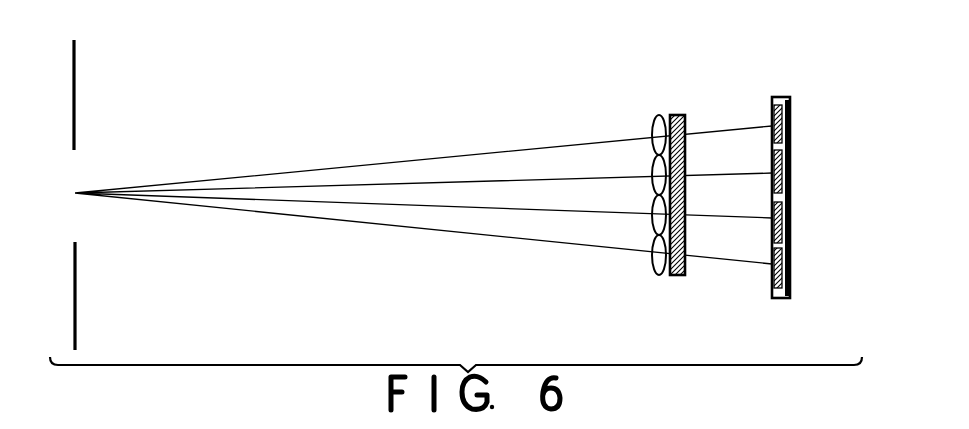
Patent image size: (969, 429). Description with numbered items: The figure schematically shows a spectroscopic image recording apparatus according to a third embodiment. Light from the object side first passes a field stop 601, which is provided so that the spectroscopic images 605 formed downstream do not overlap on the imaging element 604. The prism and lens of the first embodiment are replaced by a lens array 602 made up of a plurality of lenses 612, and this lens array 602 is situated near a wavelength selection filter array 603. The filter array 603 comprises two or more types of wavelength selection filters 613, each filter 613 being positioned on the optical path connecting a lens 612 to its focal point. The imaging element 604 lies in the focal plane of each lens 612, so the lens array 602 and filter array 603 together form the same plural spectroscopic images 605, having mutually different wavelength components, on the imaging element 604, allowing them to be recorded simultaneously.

The field stop 601 is at (75, 104).
The lens array 602 is at (625, 194).
The wavelength selection filter array 603 is at (702, 205).
The imaging element 604 is at (804, 187).
The spectroscopic images 605 is at (782, 280).
The lens 612 is at (652, 263).
The wavelength selection filter 613 is at (681, 277).